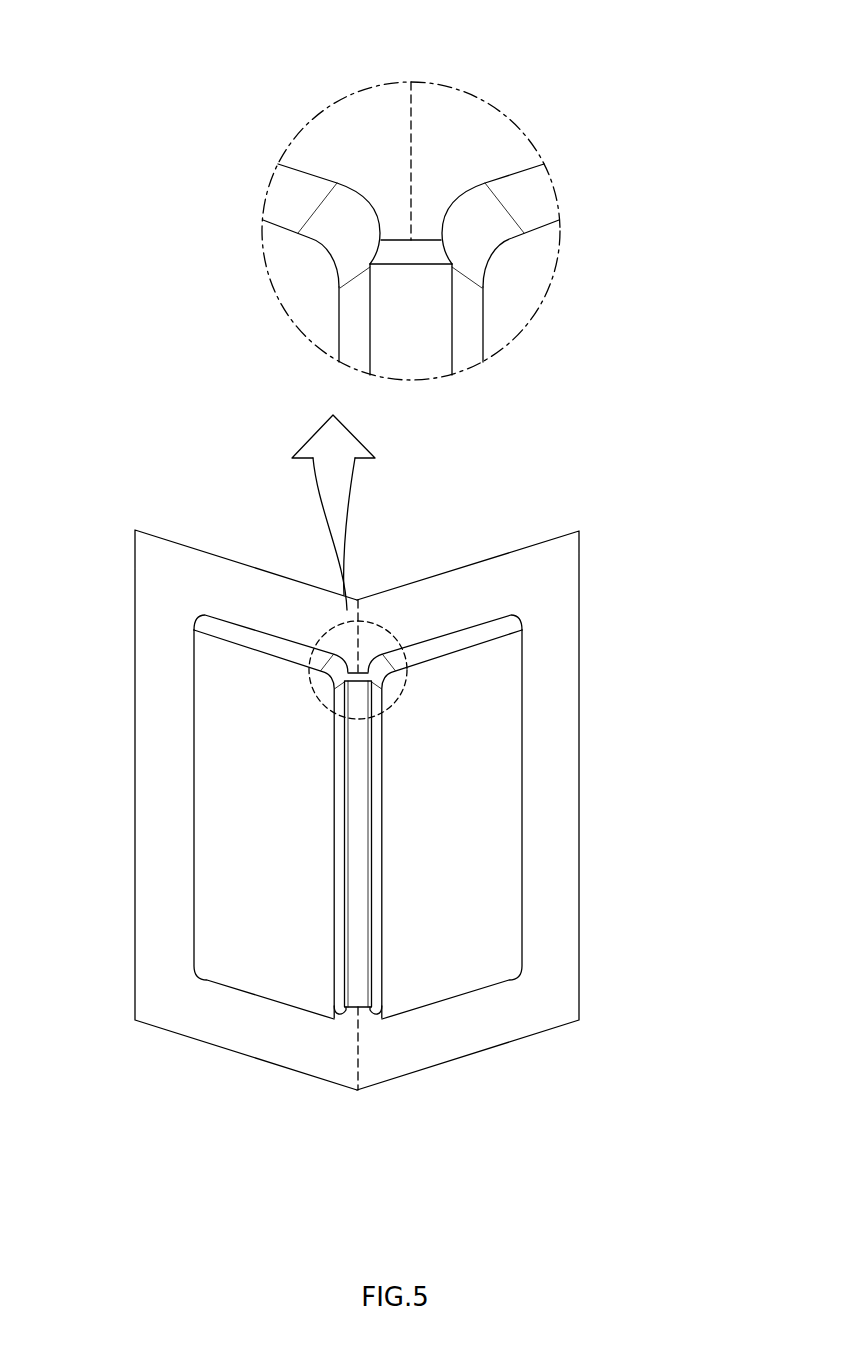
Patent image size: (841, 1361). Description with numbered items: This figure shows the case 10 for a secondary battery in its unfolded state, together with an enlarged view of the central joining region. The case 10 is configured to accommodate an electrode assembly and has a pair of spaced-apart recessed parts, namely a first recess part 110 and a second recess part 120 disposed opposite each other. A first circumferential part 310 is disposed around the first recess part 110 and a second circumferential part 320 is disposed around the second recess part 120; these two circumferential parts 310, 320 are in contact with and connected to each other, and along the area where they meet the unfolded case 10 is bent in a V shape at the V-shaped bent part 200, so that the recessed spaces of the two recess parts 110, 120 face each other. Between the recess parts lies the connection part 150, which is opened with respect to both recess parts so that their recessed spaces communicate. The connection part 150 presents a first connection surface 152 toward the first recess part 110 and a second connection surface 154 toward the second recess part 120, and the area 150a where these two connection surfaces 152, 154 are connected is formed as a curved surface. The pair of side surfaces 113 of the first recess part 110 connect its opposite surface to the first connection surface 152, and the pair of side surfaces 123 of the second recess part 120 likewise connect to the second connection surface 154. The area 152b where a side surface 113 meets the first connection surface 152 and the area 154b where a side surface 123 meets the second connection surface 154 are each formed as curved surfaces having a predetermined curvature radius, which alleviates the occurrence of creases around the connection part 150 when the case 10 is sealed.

The case 10 is at (373, 810).
The first recess part 110 is at (250, 735).
The side surfaces of the first recess part 113 is at (297, 182).
The second recess part 120 is at (465, 735).
The side surfaces of the second recess part 123 is at (525, 182).
The connection part 150 is at (463, 664).
The area on which the first and second connection surfaces are connected 150a is at (410, 355).
The first connection surface 152 is at (274, 296).
The area on which the side surface of the first recess part and the first connection 152b is at (337, 235).
The second connection surface 154 is at (546, 296).
The area on which the side surface of the second recess part and the second connecti 154b is at (485, 235).
The V-shaped bent part 200 is at (411, 100).
The first circumferential part 310 is at (173, 720).
The second circumferential part 320 is at (542, 718).